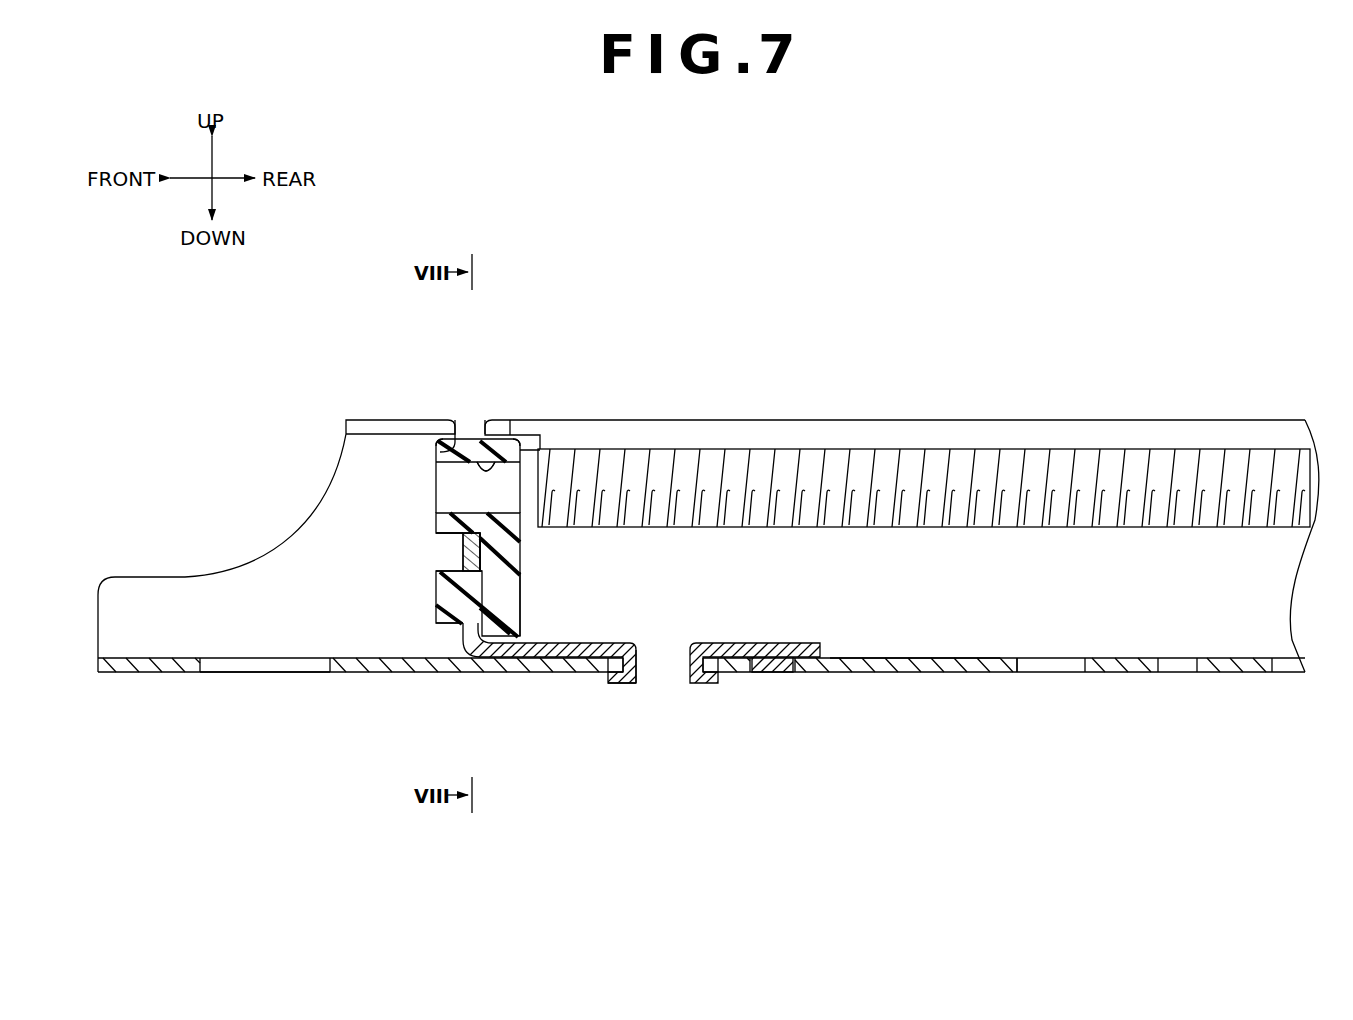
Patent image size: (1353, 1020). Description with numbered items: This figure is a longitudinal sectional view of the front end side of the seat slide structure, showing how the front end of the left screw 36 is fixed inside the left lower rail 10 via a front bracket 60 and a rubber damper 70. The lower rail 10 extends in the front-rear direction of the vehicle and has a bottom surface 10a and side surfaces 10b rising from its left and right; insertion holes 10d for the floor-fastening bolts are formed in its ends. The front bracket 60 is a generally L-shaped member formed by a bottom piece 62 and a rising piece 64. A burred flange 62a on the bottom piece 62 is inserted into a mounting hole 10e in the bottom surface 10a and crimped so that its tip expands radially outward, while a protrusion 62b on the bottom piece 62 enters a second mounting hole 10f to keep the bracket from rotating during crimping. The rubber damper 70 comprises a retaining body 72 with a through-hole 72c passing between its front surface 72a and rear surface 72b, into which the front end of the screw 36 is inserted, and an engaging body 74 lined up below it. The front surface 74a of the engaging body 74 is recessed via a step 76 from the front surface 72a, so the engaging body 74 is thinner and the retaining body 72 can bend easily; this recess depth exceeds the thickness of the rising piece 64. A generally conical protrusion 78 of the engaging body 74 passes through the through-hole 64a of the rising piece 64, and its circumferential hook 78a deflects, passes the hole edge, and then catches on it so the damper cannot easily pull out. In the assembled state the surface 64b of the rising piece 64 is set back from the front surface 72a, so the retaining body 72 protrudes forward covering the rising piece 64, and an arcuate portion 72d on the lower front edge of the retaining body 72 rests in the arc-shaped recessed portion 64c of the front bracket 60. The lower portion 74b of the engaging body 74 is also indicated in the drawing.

The lower rail 10 is at (860, 403).
The bottom surface 10a is at (978, 668).
The side surfaces 10b is at (903, 640).
The insertion holes 10d is at (268, 672).
The mounting hole 10e is at (700, 685).
The mounting hole 10f is at (786, 672).
The left screw 36 is at (1032, 468).
The front bracket 60 is at (683, 553).
The bottom piece 62 is at (588, 642).
The flange 62a is at (637, 685).
The protrusion 62b is at (768, 675).
The rising piece 64 is at (510, 550).
The through-hole 64a is at (463, 558).
The surface 64b is at (463, 545).
The recessed portion 64c is at (472, 463).
The rubber damper 70 is at (242, 430).
The retaining body 72 is at (430, 456).
The front surface 72a is at (430, 448).
The rear surface 72b is at (523, 452).
The through-hole 72c is at (497, 440).
The arcuate portion 72d is at (472, 463).
The engaging body 74 is at (420, 527).
The front surface 74a is at (505, 562).
The body leg 74b is at (520, 600).
The step 76 is at (490, 530).
The protrusion 78 is at (437, 595).
The hook 78a is at (450, 627).